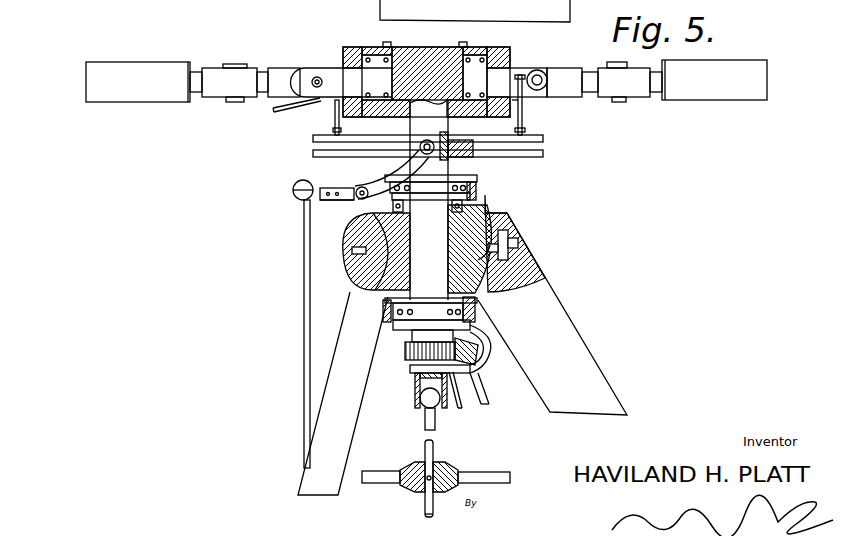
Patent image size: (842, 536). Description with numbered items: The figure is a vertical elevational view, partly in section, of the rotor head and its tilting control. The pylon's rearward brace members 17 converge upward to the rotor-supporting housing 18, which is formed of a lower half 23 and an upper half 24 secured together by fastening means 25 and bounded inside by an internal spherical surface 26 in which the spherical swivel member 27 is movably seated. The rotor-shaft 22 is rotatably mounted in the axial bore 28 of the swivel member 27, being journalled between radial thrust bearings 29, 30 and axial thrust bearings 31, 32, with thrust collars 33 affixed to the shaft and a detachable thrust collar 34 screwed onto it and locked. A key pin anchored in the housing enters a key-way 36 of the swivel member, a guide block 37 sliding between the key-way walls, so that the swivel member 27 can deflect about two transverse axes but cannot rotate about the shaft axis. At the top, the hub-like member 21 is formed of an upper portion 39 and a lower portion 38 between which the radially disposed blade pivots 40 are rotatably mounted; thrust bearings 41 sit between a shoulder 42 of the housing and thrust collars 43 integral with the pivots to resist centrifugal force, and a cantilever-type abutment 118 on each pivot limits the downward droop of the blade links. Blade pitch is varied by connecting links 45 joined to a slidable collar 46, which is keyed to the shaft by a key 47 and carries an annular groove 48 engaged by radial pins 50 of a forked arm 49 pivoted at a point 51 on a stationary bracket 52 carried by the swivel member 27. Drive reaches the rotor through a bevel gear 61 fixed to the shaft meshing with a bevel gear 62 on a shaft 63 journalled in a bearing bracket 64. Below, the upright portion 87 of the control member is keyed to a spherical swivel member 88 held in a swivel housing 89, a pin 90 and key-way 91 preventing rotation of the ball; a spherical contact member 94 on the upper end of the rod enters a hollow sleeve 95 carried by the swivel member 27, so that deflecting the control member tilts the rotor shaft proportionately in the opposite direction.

The rearward brace member 17 is at (324, 394).
The rotor-supporting housing 18 is at (270, 334).
The hub-like member 21 is at (406, 48).
The rotor-shaft 22 is at (429, 200).
The lower half 23 is at (532, 263).
The upper half 24 is at (507, 216).
The fastening means 25 is at (518, 243).
The internal spherical surface 26 is at (335, 251).
The spherical swivel member 27 is at (475, 276).
The axial bore 28 is at (552, 297).
The radial thrust bearing 29 is at (397, 205).
The radial thrust bearing 30 is at (380, 297).
The axial thrust bearing 31 is at (473, 184).
The axial thrust bearing 32 is at (490, 350).
The thrust collar 33 is at (377, 173).
The thrust collar 34 is at (402, 322).
The key-way 36 is at (483, 210).
The guide block 37 is at (508, 236).
The lower portion 38 is at (519, 64).
The upper portion 39 is at (515, 108).
The blade pivot 40 is at (545, 55).
The thrust bearing 41 is at (503, 58).
The shoulder 42 is at (540, 58).
The thrust collar 43 is at (477, 62).
The connecting link 45 is at (512, 101).
The slidable collar 46 is at (543, 138).
The key 47 is at (465, 137).
The annular groove 48 is at (544, 153).
The forked arm 49 is at (293, 184).
The radial pin 50 is at (421, 142).
The pivot point 51 is at (322, 190).
The stationary bracket 52 is at (320, 198).
The bevel gear 61 is at (449, 375).
The bevel gear 62 is at (482, 400).
The shaft 63 is at (489, 403).
The bearing bracket 64 is at (485, 351).
The upright portion of control member 87 is at (433, 504).
The spherical swivel member 88 is at (440, 465).
The swivel housing 89 is at (408, 486).
The pin 90 is at (426, 514).
The key-way 91 is at (450, 463).
The spherical contact member 94 is at (429, 401).
The hollow sleeve 95 is at (417, 393).
The cantilever-type abutment 118 is at (287, 104).